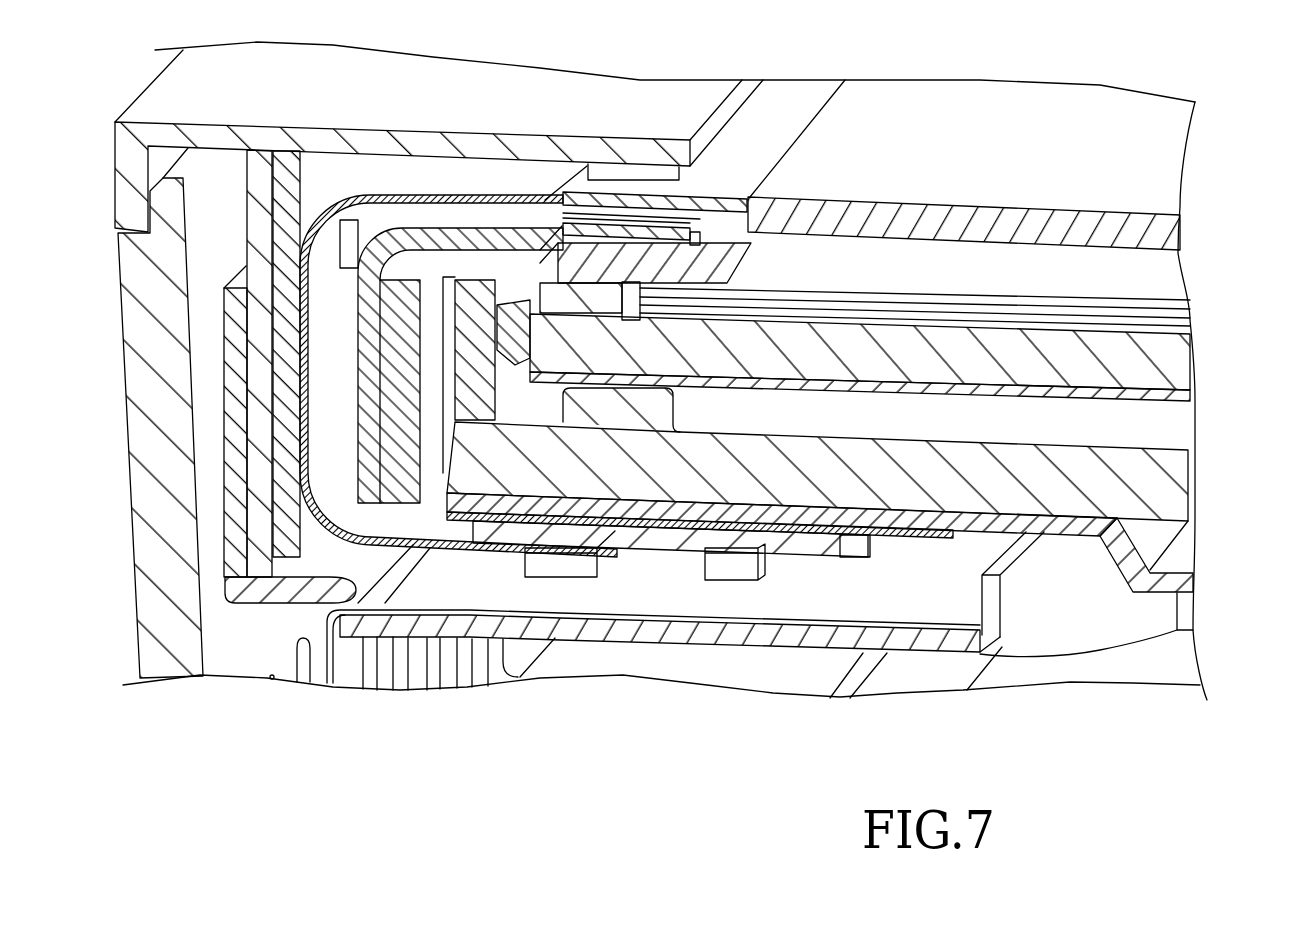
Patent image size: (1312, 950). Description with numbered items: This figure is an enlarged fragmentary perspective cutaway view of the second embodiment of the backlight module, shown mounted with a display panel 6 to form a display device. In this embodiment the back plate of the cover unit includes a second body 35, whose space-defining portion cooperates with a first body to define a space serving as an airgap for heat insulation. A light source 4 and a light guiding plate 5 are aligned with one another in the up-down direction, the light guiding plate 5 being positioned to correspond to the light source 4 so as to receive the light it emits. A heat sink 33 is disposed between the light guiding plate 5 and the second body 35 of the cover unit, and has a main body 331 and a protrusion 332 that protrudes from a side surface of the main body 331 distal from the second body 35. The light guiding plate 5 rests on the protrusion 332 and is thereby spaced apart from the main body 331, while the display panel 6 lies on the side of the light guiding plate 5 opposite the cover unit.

The light source 4 is at (479, 303).
The light guiding plate 5 is at (1187, 368).
The display panel 6 is at (1178, 233).
The heat sink 33 is at (817, 598).
The main body 331 is at (787, 483).
The protrusion 332 is at (617, 413).
The second body 35 is at (1183, 585).